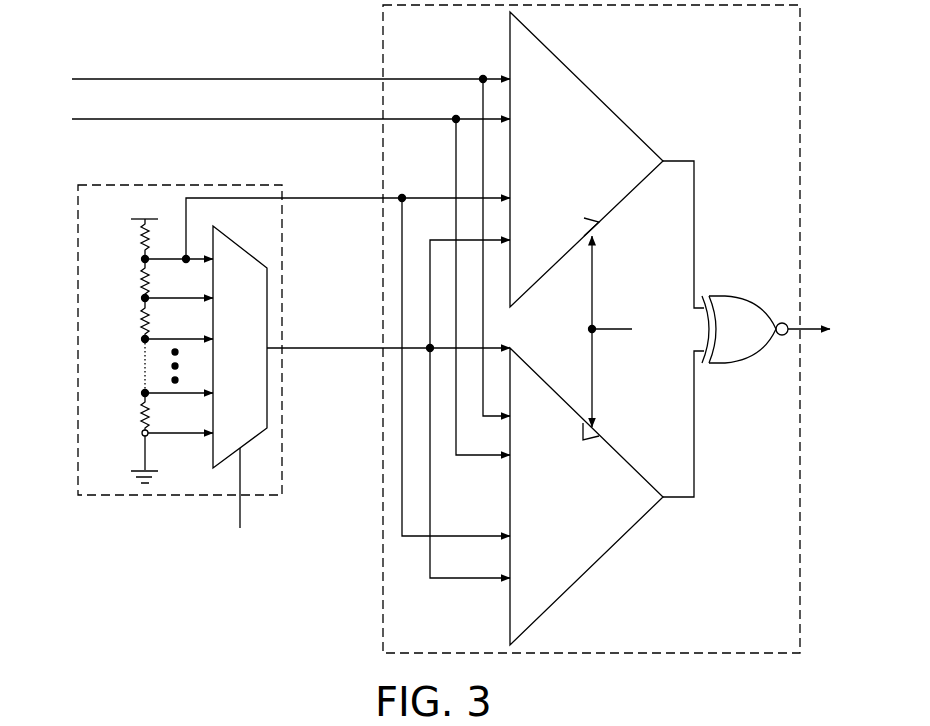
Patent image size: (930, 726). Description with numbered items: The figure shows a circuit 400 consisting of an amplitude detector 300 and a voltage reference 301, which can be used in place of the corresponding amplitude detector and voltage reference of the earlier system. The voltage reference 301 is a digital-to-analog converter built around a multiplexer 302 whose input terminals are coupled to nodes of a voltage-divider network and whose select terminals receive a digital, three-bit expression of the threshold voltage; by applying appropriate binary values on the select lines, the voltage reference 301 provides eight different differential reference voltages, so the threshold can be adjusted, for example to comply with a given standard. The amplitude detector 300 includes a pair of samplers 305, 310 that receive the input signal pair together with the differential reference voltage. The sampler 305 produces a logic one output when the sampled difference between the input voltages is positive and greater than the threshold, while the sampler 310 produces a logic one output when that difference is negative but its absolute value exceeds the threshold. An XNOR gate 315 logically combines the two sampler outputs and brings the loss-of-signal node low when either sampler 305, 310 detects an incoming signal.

The amplitude detector 300 is at (797, 32).
The voltage reference 301 is at (116, 363).
The multiplexer 302 is at (258, 361).
The sampler 305 is at (606, 170).
The sampler 310 is at (606, 507).
The XNOR gate 315 is at (760, 341).
The loss of signal detection circuit 400 is at (162, 702).